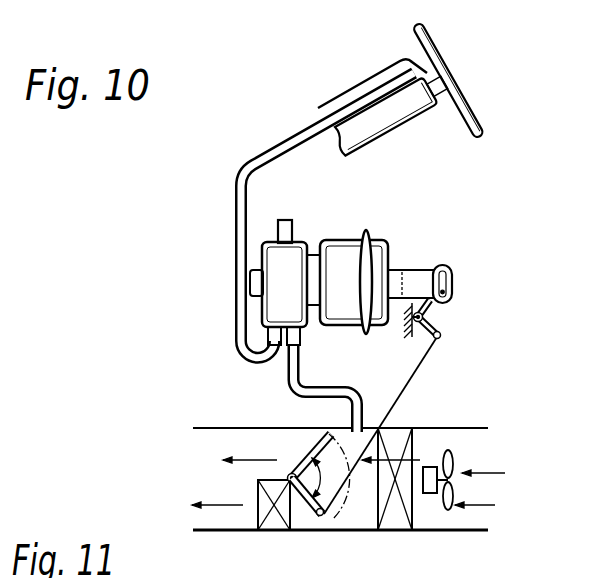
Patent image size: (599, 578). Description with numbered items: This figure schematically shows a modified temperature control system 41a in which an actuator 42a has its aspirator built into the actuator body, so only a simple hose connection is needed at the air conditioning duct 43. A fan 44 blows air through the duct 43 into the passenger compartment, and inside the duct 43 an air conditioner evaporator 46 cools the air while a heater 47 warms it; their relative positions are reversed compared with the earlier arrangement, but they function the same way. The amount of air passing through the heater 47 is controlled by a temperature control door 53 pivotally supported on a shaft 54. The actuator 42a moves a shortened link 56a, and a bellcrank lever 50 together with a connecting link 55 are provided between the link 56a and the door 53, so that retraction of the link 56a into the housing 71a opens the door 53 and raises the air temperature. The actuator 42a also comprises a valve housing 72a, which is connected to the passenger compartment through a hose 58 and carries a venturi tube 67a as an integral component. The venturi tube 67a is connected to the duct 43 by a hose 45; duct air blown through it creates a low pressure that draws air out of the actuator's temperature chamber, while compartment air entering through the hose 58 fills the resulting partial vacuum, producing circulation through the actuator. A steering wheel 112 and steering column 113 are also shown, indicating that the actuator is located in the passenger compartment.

The system 41a is at (290, 102).
The actuator 42a is at (482, 273).
The air conditioning duct 43 is at (472, 428).
The fan 44 is at (452, 462).
The hose 45 is at (328, 372).
The air conditioner evaporator 46 is at (392, 515).
The heater 47 is at (268, 522).
The bellcrank lever 50 is at (437, 319).
The temperature control door 53 is at (304, 510).
The shaft 54 is at (290, 472).
The connecting link 55 is at (424, 360).
The link 56a is at (408, 284).
The hose 58 is at (236, 180).
The venturi tube 67a is at (276, 231).
The housing 71a is at (342, 247).
The valve housing 72a is at (293, 252).
The steering wheel 112 is at (478, 125).
The steering column 113 is at (408, 121).